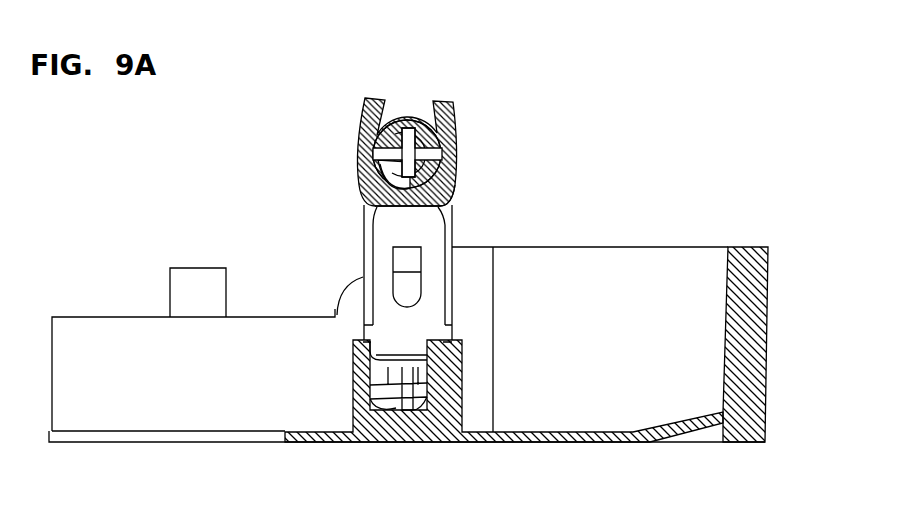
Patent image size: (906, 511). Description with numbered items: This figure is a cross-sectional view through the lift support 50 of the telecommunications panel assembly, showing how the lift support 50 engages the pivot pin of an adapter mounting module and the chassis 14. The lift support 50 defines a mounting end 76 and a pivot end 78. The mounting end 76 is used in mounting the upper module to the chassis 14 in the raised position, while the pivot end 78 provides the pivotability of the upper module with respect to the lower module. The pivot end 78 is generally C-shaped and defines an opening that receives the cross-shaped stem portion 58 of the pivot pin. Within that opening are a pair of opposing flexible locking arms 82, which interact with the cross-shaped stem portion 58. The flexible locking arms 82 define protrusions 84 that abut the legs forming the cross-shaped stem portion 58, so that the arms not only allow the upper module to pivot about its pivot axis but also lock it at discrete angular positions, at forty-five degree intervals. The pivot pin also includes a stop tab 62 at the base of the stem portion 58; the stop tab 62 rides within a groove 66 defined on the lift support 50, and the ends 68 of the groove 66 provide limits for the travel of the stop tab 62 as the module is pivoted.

The chassis 14 is at (757, 392).
The lift support 50 is at (453, 182).
The stem portion 58 is at (408, 130).
The stop tab 62 is at (373, 154).
The groove 66 is at (393, 184).
The ends 68 is at (420, 200).
The mounting end 76 is at (345, 307).
The pivot end 78 is at (419, 221).
The flexible locking arms 82 is at (424, 156).
The protrusions 84 is at (415, 140).